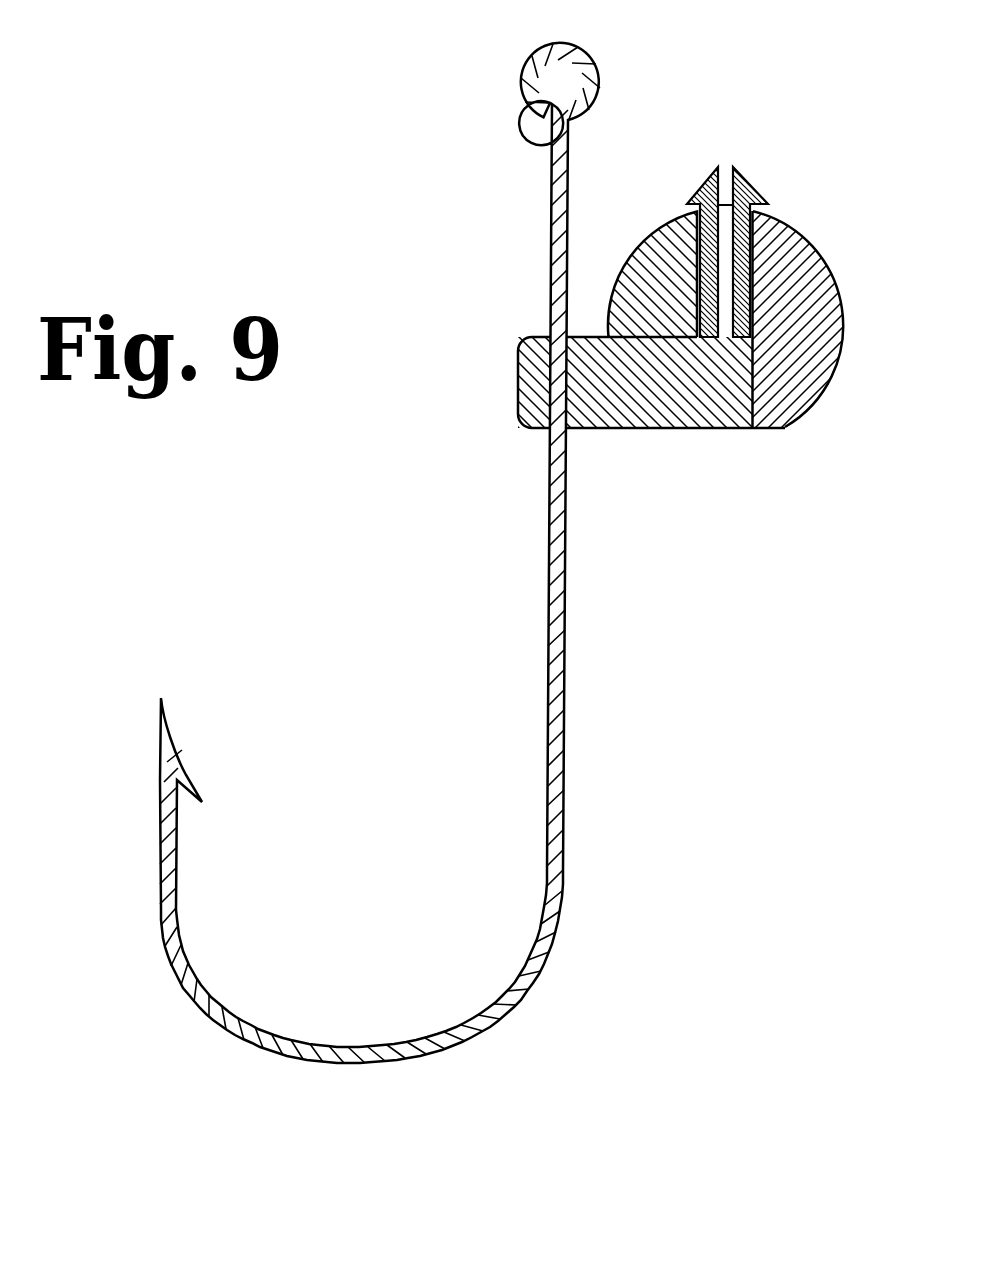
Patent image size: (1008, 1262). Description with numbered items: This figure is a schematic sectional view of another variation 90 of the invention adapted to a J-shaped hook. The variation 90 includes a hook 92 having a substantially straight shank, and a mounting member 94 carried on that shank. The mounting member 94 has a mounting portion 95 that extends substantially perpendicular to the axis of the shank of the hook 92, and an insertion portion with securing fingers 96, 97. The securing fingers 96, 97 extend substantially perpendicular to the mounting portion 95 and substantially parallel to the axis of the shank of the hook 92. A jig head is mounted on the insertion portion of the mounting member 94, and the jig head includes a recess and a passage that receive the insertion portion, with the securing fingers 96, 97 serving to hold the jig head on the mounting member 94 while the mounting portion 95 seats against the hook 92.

The variation 90 is at (694, 337).
The hook 92 is at (558, 176).
The mounting member 94 is at (740, 465).
The mounting portion 95 is at (645, 388).
The securing finger 96 is at (710, 187).
The securing finger 97 is at (745, 187).